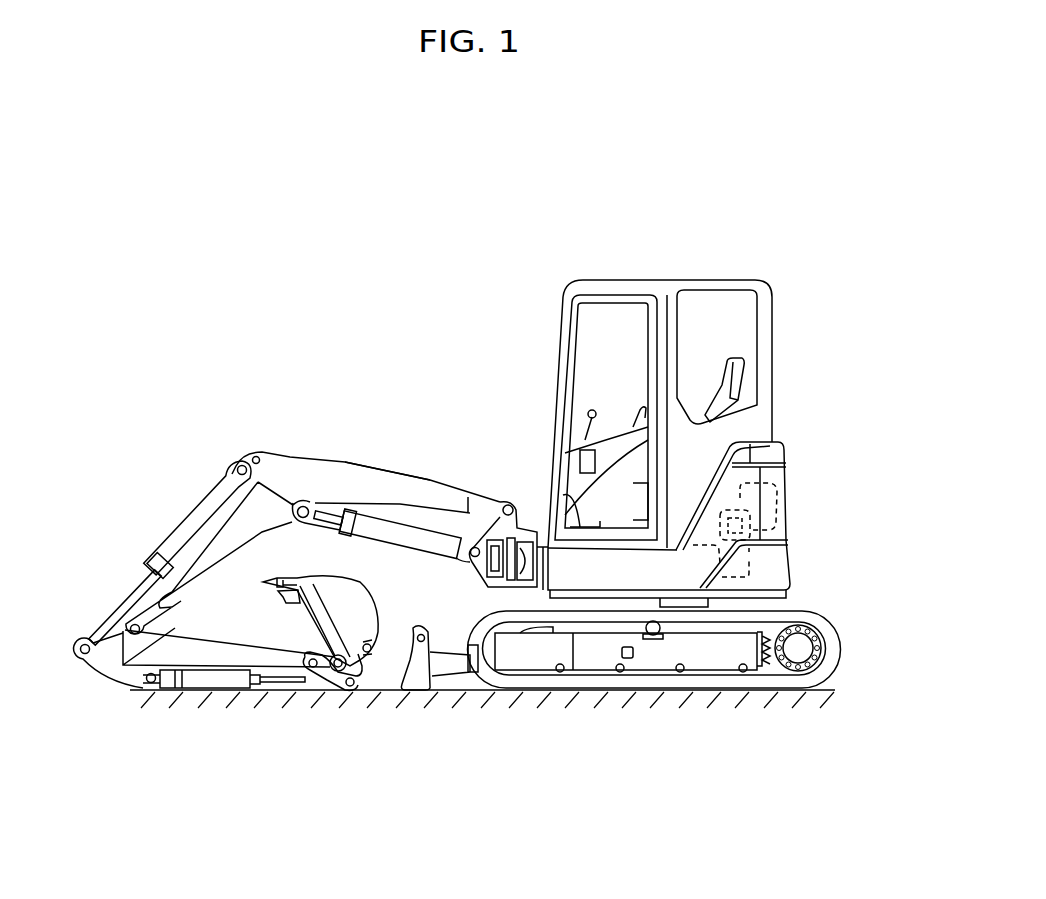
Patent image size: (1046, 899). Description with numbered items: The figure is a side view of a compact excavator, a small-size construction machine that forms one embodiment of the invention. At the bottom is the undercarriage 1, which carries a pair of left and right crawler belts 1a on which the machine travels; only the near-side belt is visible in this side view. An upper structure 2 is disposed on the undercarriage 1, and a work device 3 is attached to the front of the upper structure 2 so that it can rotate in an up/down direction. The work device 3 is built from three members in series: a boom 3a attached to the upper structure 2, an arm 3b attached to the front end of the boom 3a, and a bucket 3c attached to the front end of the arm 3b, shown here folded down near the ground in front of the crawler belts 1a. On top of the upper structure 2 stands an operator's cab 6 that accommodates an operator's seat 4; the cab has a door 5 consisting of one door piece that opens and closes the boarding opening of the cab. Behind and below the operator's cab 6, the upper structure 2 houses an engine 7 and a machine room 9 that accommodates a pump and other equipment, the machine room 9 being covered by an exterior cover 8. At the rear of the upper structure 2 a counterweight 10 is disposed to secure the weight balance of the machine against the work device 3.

The undercarriage 1 is at (658, 696).
The crawler belts 1a is at (840, 651).
The upper structure 2 is at (797, 431).
The work device 3 is at (353, 455).
The boom 3a is at (425, 485).
The arm 3b is at (216, 683).
The bucket 3c is at (375, 598).
The operator's seat 4 is at (740, 370).
The door 5 is at (572, 345).
The operator's cab 6 is at (684, 270).
The engine 7 is at (786, 505).
The exterior cover 8 is at (784, 487).
The machine room 9 is at (788, 522).
The counterweight 10 is at (793, 562).